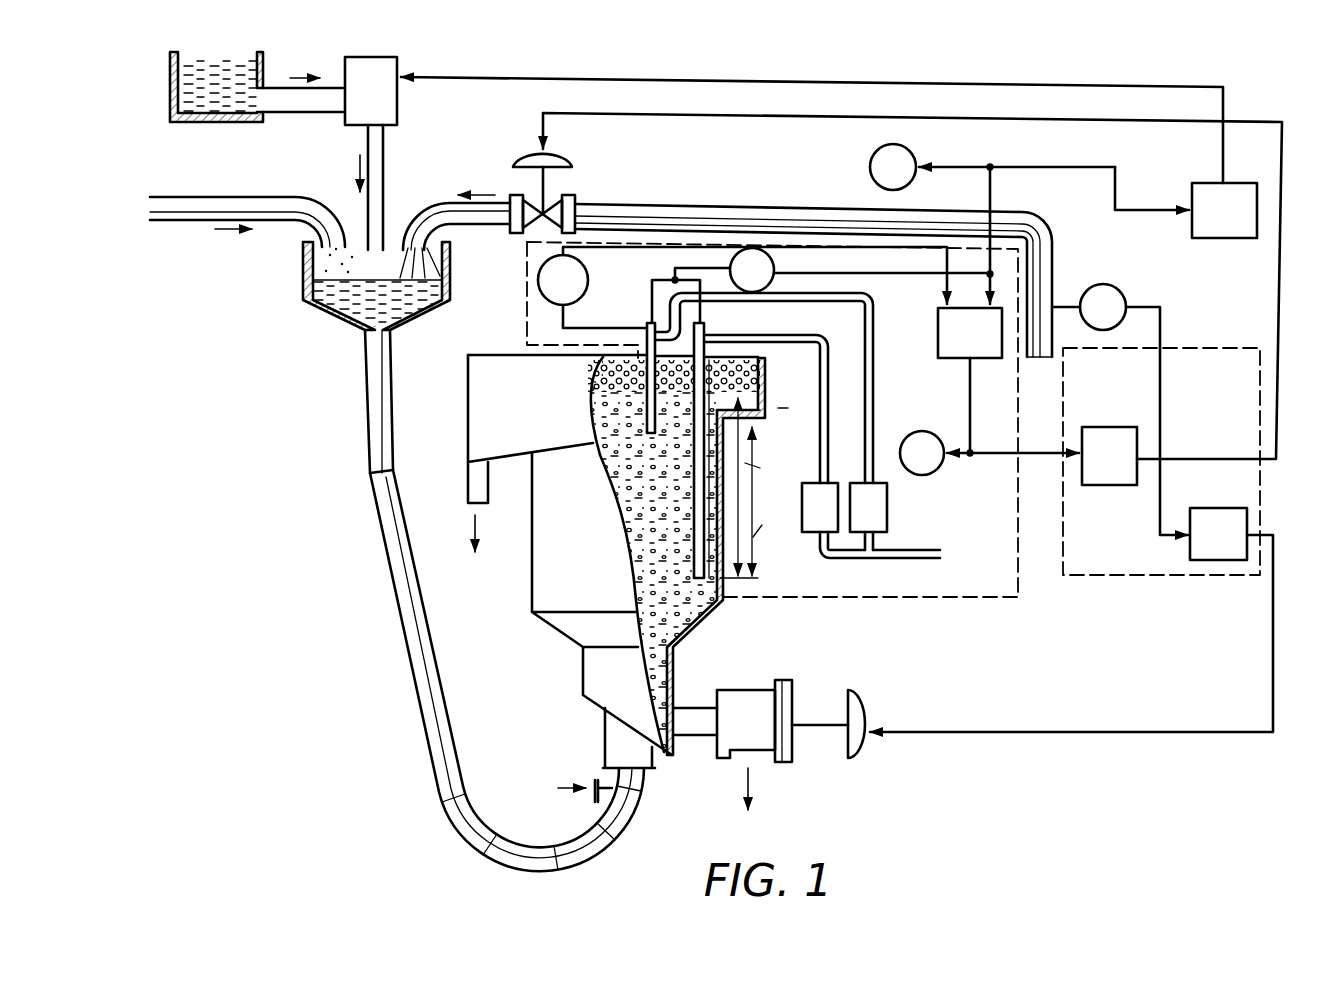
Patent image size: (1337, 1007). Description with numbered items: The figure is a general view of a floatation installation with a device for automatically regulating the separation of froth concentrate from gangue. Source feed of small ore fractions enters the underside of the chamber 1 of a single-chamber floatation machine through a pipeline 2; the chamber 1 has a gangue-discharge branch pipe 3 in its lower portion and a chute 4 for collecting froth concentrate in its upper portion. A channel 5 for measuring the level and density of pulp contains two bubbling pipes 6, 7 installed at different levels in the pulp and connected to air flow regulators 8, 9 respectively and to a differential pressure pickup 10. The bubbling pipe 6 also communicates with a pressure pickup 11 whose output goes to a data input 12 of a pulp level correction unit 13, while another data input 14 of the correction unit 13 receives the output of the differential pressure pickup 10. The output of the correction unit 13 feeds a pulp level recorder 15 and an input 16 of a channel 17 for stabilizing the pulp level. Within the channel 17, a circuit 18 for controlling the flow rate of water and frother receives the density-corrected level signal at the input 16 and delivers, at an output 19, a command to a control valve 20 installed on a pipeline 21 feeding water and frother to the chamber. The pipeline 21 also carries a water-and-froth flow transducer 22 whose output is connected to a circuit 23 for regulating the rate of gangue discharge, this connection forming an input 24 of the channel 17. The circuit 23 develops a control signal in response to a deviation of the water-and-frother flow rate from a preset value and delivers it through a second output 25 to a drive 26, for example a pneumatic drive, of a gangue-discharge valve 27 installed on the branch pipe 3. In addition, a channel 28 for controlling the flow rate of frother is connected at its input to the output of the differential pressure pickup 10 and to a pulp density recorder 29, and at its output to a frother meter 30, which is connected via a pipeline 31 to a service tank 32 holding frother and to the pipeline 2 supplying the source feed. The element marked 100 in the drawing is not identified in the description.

The chamber 1 is at (614, 561).
The pipeline 2 is at (502, 600).
The gangue-discharge branch pipe 3 is at (695, 694).
The chute 4 is at (736, 554).
The channel for measuring the level and density of pulp 5 is at (552, 300).
The bubbling pipe 6 is at (638, 360).
The bubbling pipe 7 is at (715, 440).
The air flow regulator 8 is at (883, 516).
The air flow regulator 9 is at (822, 446).
The differential pressure pickup 10 is at (822, 365).
The pressure pickup 11 is at (592, 291).
The data input 12 is at (755, 281).
The pulp level correction unit 13 is at (970, 380).
The data input 14 is at (1012, 235).
The pulp level recorder 15 is at (940, 471).
The input 16 is at (1024, 483).
The channel for stabilizing the level of pulp 17 is at (792, 420).
The circuit for controlling the flow rate of water and frother 18 is at (1109, 456).
The output 19 is at (935, 286).
The control valve 20 is at (564, 192).
The pipeline 21 is at (813, 254).
The water-and-froth flow transducer 22 is at (1120, 382).
The circuit for regulating the rate of gangue discharge 23 is at (1218, 534).
The input 24 is at (1161, 437).
The second output 25 is at (1091, 608).
The drive 26 is at (881, 709).
The gangue-discharge valve 27 is at (782, 720).
The channel for controlling the flow rate of frother 28 is at (829, 157).
The pulp density recorder 29 is at (992, 156).
The frother meter 30 is at (396, 153).
The pipeline 31 is at (304, 124).
The service tank 32 is at (245, 72).
The injection nozzle 100 is at (575, 769).